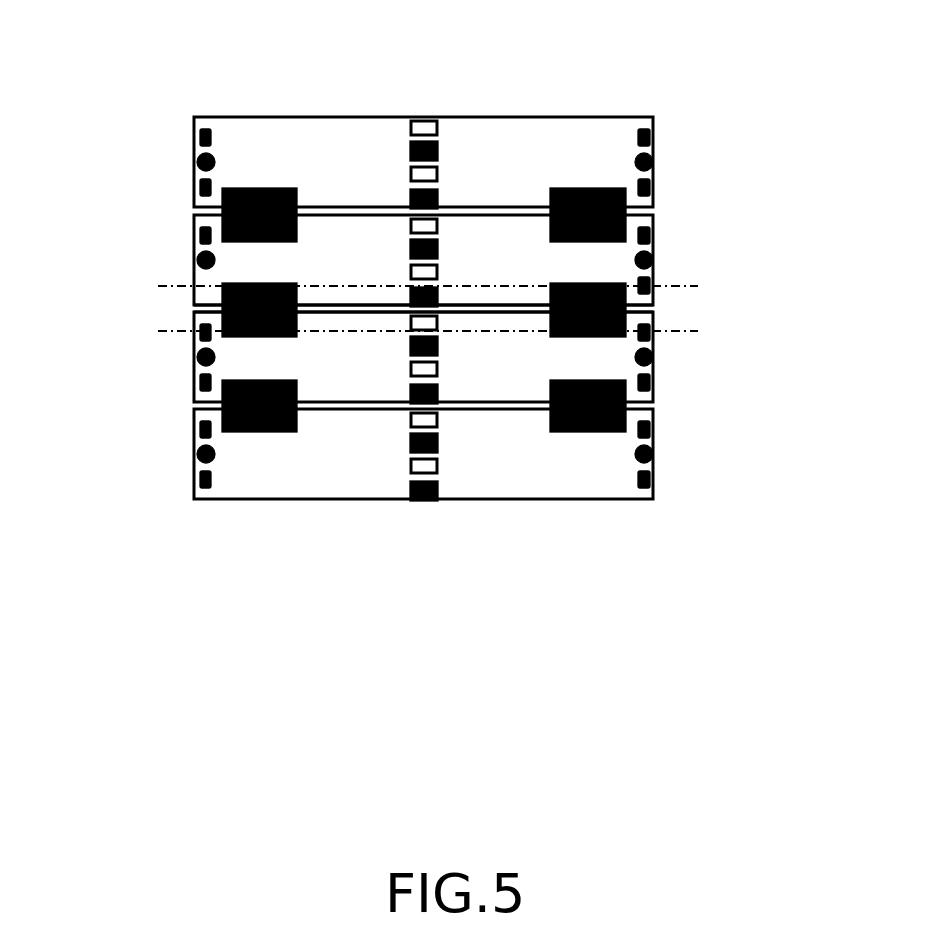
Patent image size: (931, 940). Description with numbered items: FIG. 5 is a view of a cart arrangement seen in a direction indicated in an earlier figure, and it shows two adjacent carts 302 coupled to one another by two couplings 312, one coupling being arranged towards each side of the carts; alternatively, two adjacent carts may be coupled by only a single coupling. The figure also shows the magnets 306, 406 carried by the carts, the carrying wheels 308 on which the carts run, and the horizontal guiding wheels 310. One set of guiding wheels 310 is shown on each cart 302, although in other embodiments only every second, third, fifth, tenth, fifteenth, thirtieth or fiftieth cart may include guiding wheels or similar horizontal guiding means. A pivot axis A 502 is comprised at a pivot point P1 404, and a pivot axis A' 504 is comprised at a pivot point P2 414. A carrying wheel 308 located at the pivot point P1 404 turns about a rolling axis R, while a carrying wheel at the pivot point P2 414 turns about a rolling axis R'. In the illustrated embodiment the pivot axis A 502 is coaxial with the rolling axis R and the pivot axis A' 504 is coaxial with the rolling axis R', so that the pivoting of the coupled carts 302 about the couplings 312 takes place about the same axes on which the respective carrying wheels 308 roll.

The cart 302 is at (145, 228).
The magnet 306 is at (409, 143).
The carrying wheel 308 is at (194, 137).
The horizontal guiding wheel 310 is at (213, 155).
The coupling 312 is at (180, 305).
The pivot point P1 404 is at (630, 282).
The magnet 406 is at (439, 127).
The pivot point P2 414 is at (637, 342).
The pivot axis A 502 is at (158, 287).
The pivot axis A' 504 is at (158, 331).